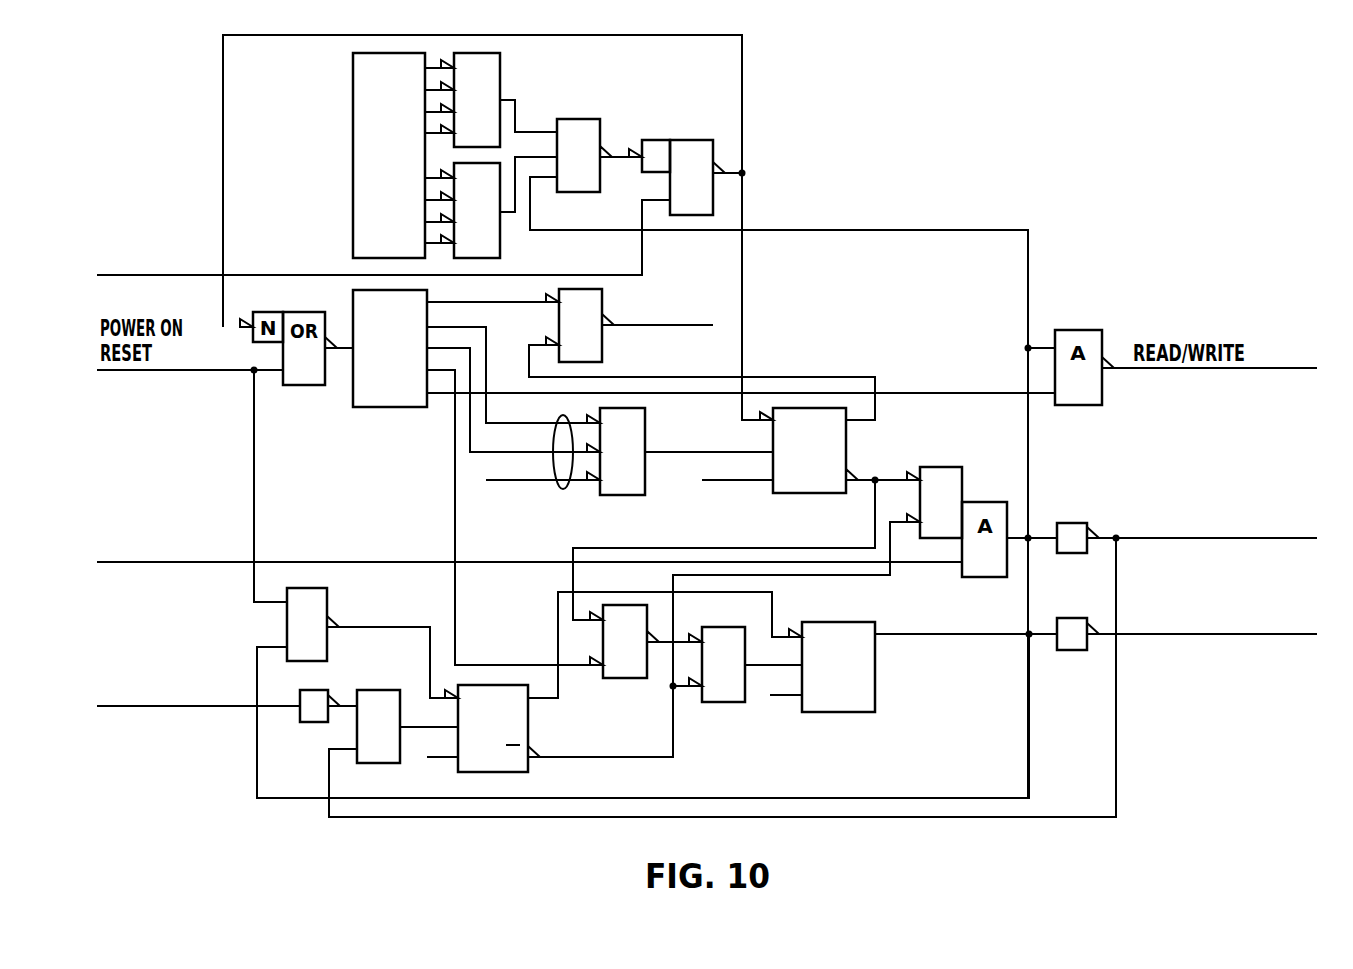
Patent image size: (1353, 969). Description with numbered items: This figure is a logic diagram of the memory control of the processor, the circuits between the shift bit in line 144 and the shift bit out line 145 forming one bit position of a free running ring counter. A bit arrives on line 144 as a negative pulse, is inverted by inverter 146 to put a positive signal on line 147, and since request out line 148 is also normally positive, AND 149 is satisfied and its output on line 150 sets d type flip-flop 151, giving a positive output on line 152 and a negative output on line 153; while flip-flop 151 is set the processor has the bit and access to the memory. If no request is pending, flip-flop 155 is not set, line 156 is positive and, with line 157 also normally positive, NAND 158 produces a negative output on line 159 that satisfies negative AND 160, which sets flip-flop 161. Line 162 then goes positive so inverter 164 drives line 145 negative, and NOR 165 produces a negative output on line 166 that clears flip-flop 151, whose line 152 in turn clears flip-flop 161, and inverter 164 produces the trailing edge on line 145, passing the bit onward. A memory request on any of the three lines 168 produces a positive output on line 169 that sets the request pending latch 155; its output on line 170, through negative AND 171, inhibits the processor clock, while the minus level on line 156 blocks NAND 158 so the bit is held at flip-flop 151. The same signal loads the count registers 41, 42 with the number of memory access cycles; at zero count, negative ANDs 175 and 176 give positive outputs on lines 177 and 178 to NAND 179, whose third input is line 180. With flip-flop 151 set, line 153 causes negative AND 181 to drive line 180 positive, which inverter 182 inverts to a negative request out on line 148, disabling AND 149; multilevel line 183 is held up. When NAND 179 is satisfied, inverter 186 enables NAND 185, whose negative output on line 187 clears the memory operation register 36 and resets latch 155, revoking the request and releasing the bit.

The count register 41 is at (366, 155).
The count register 42 is at (353, 110).
The external memory operation register 36 is at (390, 410).
The shift bit in line 144 is at (173, 708).
The shift bit out line 145 is at (1222, 636).
The inverter 146 is at (318, 724).
The inverter output line 147 is at (352, 705).
The request out line 148 is at (1074, 817).
The AND gate 149 is at (390, 753).
The AND output line 150 is at (412, 730).
The d type flip-flop 151 is at (528, 713).
The flip-flop positive output line 152 is at (557, 599).
The flip-flop negative output line 153 is at (627, 757).
The memory request pending latch 155 is at (846, 438).
The request latch output line 156 is at (687, 548).
The NAND input line 157 is at (508, 664).
The NAND gate 158 is at (637, 666).
The NAND output line 159 is at (684, 639).
The negative AND gate 160 is at (735, 690).
The flip-flop 161 is at (875, 669).
The flip-flop output line 162 is at (977, 636).
The inverter 164 is at (1068, 618).
The NOR gate 165 is at (319, 654).
The NOR output line 166 is at (387, 626).
The request lines 168 is at (563, 489).
The request line 169 is at (703, 451).
The inhibit line 170 is at (809, 376).
The negative AND gate 171 is at (592, 351).
The negative AND gate 175 is at (489, 128).
The negative AND gate 176 is at (489, 239).
The count zero line 177 is at (538, 132).
The count zero line 178 is at (512, 215).
The NAND gate 179 is at (590, 187).
The request line 180 is at (1028, 281).
The negative AND gate 181 is at (953, 536).
The inverter 182 is at (1068, 523).
The multilevel line 183 is at (173, 564).
The NAND gate 185 is at (703, 205).
The inverter 186 is at (655, 140).
The clear line 187 is at (742, 275).